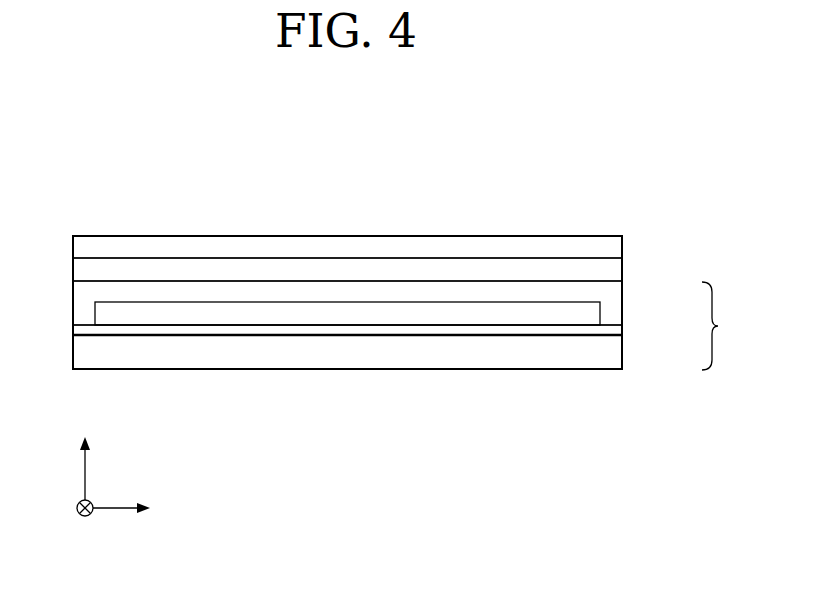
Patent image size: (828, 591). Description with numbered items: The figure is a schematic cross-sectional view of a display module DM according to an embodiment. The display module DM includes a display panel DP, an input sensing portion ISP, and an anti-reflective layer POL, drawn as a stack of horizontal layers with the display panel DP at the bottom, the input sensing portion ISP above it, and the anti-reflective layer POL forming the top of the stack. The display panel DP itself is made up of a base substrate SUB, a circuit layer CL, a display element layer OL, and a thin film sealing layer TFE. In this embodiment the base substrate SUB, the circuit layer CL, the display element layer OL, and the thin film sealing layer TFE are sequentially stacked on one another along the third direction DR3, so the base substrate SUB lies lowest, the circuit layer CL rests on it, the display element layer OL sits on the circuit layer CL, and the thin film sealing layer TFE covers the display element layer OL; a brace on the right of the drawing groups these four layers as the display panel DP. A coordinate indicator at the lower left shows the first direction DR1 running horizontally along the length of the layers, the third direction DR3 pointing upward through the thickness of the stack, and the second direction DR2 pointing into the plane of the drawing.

The display module DM is at (563, 170).
The anti-reflective layer POL is at (610, 249).
The input sensing portion ISP is at (610, 271).
The thin film sealing layer TFE is at (610, 292).
The display element layer OL is at (590, 317).
The circuit layer CL is at (610, 331).
The base substrate SUB is at (610, 352).
The display panel DP is at (724, 326).
The first direction DR1 is at (141, 508).
The second direction DR2 is at (85, 522).
The third direction DR3 is at (85, 455).